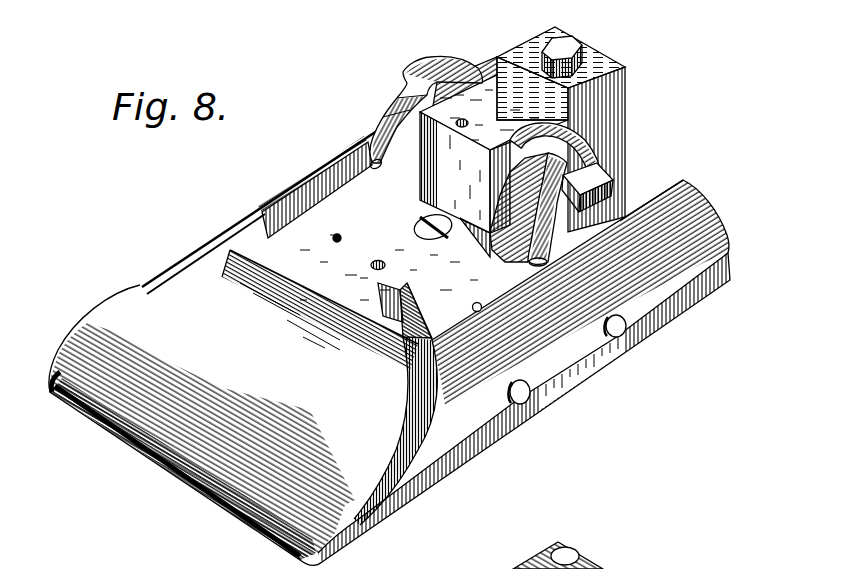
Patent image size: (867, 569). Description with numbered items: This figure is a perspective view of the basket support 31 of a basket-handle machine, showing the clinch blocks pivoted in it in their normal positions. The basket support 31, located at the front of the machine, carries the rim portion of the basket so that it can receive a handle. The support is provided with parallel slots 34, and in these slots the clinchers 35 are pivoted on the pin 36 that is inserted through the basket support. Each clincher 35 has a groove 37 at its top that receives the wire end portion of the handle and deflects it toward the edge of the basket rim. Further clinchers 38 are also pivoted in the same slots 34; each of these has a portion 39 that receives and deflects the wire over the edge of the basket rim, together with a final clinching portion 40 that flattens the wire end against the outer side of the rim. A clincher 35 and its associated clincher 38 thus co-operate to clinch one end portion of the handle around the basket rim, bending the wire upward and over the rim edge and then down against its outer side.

The basket support 31 is at (152, 458).
The parallel slots 34 is at (260, 233).
The clinchers 35 is at (277, 220).
The pin 36 is at (524, 398).
The groove 37 is at (340, 237).
The clinchers 38 is at (447, 62).
The portion 39 is at (372, 152).
The final clinching portion 40 is at (600, 157).